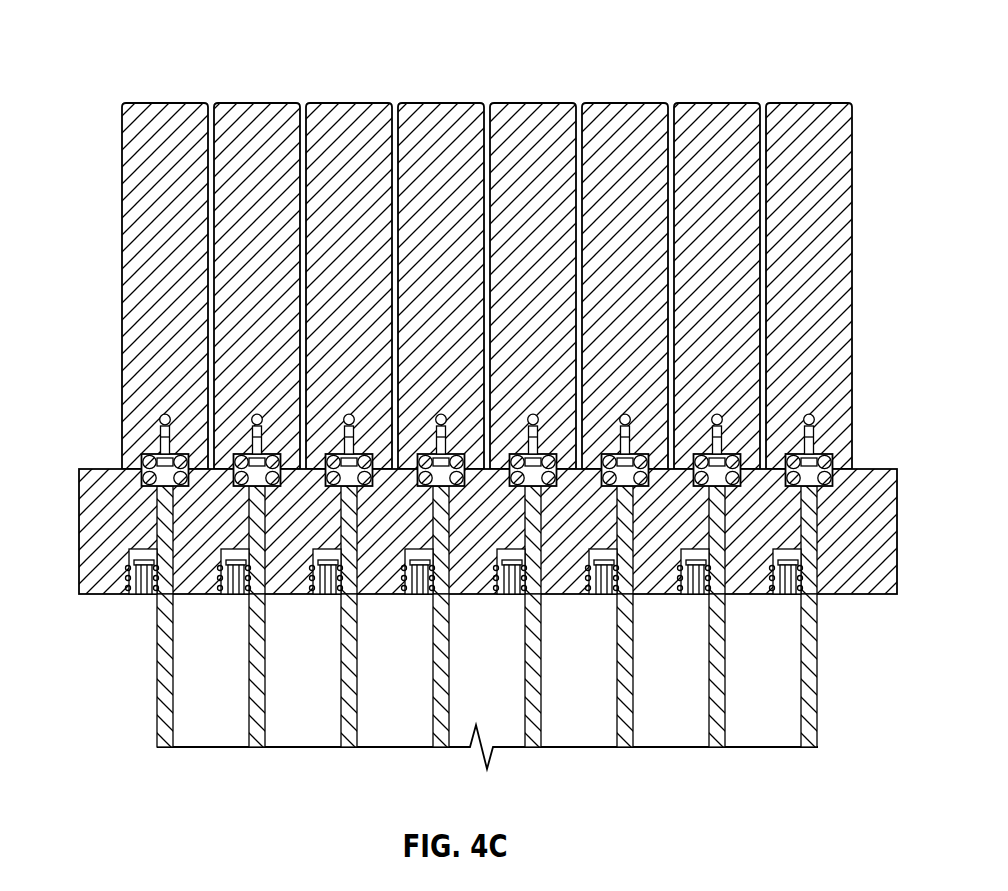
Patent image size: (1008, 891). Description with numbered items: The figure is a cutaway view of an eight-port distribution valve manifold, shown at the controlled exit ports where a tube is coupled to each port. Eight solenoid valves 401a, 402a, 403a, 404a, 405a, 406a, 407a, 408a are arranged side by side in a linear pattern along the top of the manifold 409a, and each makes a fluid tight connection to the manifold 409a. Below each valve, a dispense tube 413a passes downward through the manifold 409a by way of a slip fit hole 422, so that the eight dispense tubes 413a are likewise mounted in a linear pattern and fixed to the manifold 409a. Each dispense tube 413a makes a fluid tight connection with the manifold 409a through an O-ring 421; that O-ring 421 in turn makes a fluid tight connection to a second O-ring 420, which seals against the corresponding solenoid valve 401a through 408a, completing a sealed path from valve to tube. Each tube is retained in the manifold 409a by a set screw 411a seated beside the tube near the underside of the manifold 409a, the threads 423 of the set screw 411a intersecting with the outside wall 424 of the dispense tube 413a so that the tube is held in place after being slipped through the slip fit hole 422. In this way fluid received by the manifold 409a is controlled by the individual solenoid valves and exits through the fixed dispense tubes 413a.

The solenoid valve 401a is at (812, 125).
The solenoid valve 402a is at (720, 125).
The solenoid valve 403a is at (628, 125).
The solenoid valve 404a is at (536, 125).
The solenoid valve 405a is at (444, 125).
The solenoid valve 406a is at (352, 125).
The solenoid valve 407a is at (260, 125).
The solenoid valve 408a is at (168, 125).
The manifold 409a is at (855, 585).
The set screw 411a is at (140, 597).
The dispense tube 413a is at (348, 747).
The O-ring 420 is at (148, 462).
The O-ring 421 is at (147, 478).
The slip fit hole 422 is at (163, 528).
The threads 423 is at (343, 597).
The outside wall 424 is at (249, 735).